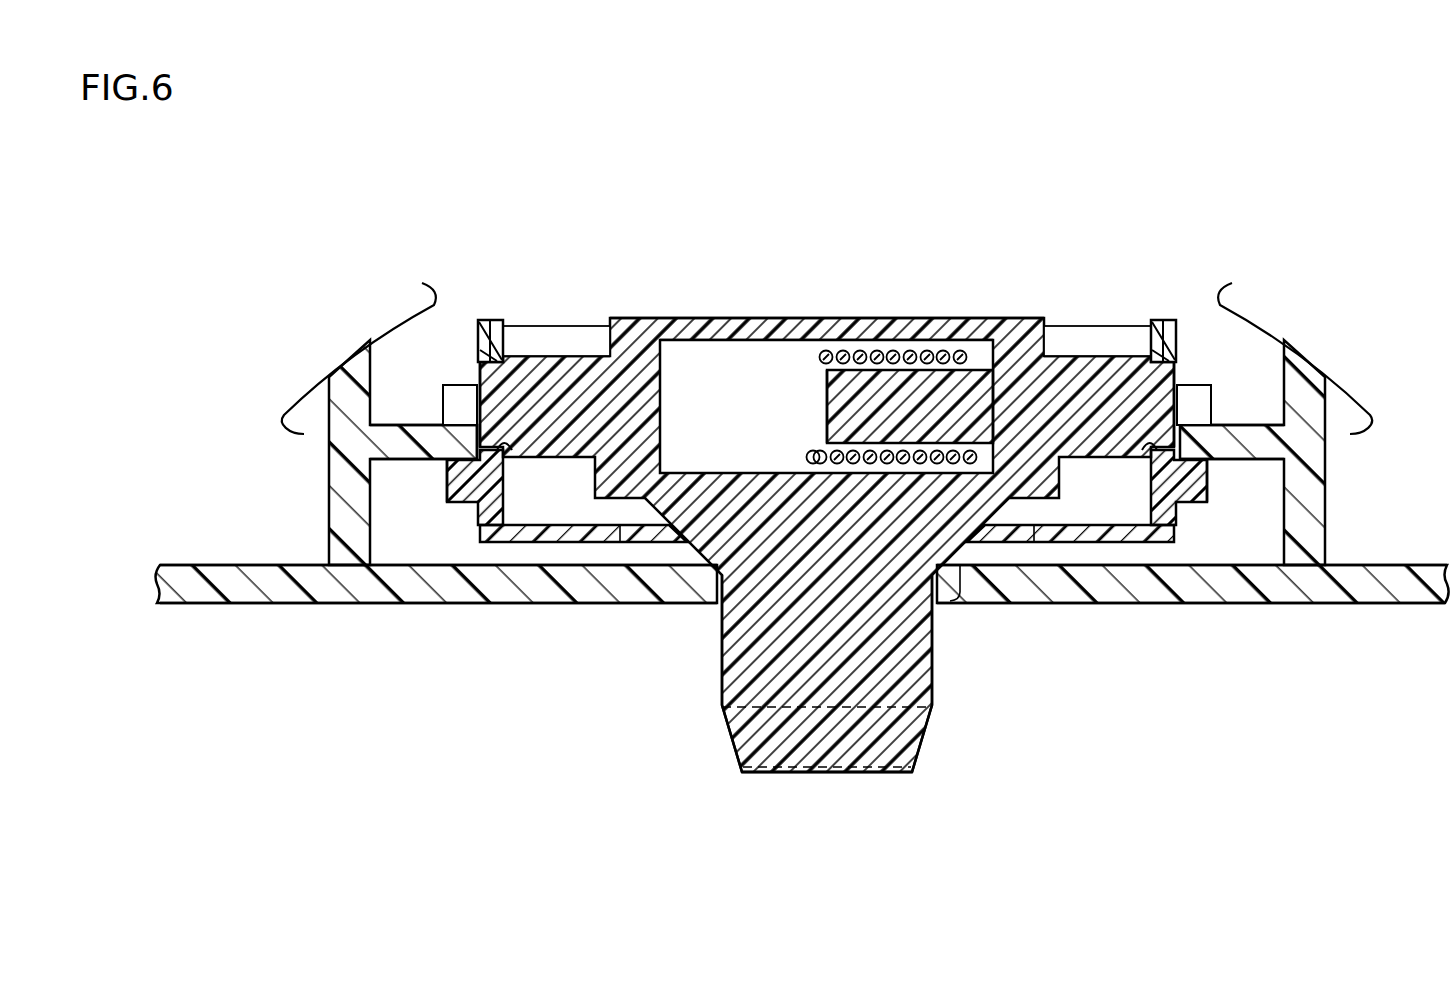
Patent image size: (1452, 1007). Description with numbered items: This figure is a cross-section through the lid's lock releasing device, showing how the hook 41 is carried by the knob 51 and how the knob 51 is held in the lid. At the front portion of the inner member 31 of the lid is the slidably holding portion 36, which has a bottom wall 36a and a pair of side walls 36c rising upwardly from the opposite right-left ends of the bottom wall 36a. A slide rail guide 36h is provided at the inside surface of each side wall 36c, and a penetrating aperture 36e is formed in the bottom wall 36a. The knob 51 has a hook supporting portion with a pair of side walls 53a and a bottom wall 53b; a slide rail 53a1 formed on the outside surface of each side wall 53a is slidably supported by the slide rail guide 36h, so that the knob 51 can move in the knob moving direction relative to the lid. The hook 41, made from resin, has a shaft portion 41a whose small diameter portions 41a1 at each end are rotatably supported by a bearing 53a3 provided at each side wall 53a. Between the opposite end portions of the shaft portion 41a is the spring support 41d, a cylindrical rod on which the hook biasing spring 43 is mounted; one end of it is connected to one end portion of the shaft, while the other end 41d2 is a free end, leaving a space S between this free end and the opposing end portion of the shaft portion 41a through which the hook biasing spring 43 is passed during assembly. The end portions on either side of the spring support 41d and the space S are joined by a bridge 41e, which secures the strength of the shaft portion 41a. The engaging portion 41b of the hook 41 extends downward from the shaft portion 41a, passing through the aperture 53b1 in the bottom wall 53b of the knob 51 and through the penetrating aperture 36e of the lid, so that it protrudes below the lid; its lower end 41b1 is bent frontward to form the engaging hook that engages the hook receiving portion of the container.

The inner member 31 is at (1395, 598).
The slidably holding portion 36 is at (1103, 593).
The bottom wall 36a is at (1226, 603).
The side walls 36c is at (342, 478).
The penetrating aperture 36e is at (950, 594).
The slide rail guide 36h is at (397, 440).
The hook 41 is at (735, 722).
The shaft portion 41a is at (567, 368).
The small diameter portion 41a1 is at (534, 358).
The engaging portion 41b is at (928, 672).
The lower end 41b1 is at (858, 737).
The spring support 41d is at (888, 392).
The other end 41d2 is at (827, 383).
The bridge 41e is at (806, 330).
The hook biasing spring 43 is at (926, 360).
The knob 51 is at (483, 322).
The side walls 53a is at (468, 524).
The slide rail 53a1 is at (462, 489).
The bearing 53a3 is at (507, 447).
The bottom wall 53b is at (585, 543).
The aperture 53b1 is at (635, 545).
The space S is at (742, 395).